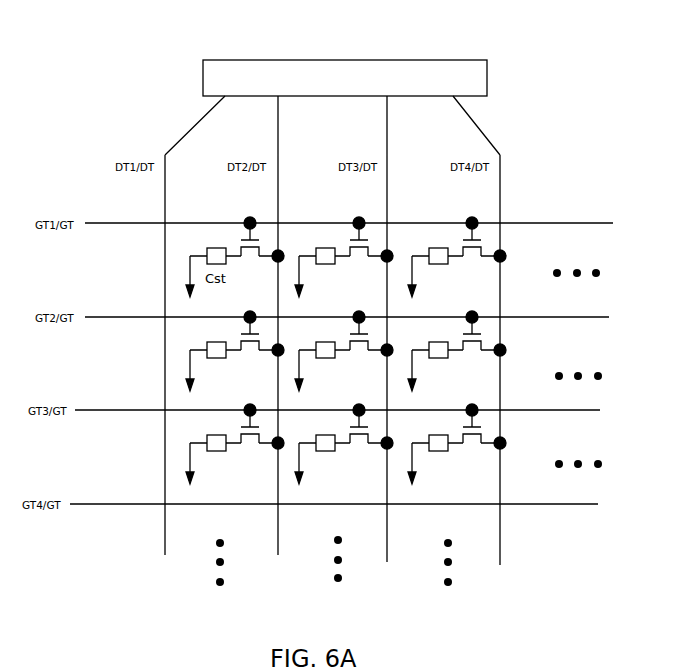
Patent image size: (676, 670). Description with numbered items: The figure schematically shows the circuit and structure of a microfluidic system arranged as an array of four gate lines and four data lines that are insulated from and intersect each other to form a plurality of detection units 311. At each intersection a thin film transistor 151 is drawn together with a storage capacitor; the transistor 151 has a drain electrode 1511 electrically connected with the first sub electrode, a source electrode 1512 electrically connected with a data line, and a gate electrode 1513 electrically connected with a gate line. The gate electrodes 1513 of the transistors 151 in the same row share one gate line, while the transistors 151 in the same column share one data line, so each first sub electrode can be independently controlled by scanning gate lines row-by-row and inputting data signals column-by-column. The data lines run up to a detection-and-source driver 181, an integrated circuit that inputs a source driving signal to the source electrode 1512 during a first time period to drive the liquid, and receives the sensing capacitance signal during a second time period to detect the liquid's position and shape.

The detection-and-source driver 181 is at (380, 70).
The thin film transistor 151 is at (252, 248).
The drain electrode 1511 is at (457, 267).
The source electrode 1512 is at (487, 252).
The gate electrode 1513 is at (478, 233).
The detection unit 311 is at (175, 353).